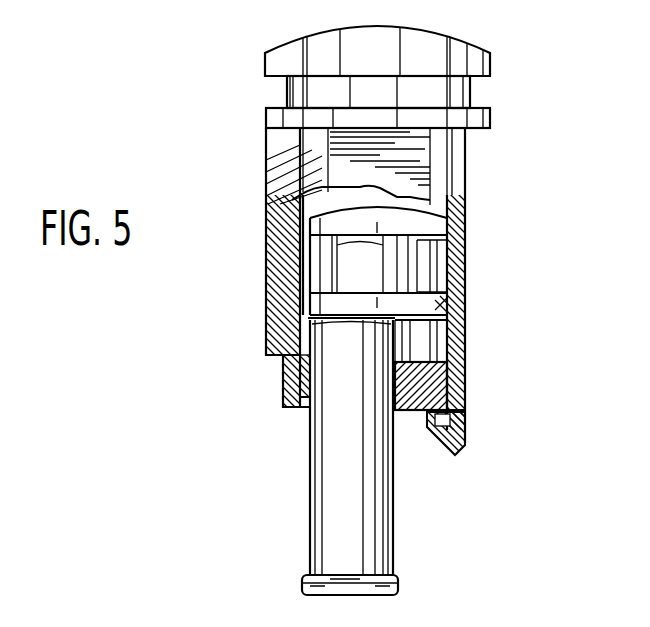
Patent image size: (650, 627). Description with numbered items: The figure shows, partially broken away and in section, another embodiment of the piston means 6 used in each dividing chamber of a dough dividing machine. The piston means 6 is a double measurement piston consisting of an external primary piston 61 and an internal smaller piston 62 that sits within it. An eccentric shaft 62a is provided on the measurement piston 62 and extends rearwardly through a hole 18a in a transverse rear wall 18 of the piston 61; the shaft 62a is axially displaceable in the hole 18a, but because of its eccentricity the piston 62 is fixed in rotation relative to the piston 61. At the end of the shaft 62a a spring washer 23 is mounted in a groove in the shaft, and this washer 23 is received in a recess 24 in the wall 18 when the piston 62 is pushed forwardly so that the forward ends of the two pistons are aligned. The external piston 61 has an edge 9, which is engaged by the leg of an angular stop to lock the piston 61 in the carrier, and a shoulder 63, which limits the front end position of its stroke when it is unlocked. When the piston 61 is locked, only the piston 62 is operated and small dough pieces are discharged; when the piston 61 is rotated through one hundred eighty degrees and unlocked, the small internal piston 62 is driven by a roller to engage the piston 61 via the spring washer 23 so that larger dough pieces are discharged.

The piston means 6 is at (502, 130).
The external primary piston 61 is at (270, 312).
The internal smaller piston 62 is at (465, 295).
The eccentric shaft 62a is at (370, 472).
The hole 18a is at (394, 349).
The transverse rear wall 18 is at (445, 391).
The shoulder 63 is at (455, 440).
The edge 9 is at (280, 366).
The recess 24 is at (308, 424).
The spring washer 23 is at (398, 582).